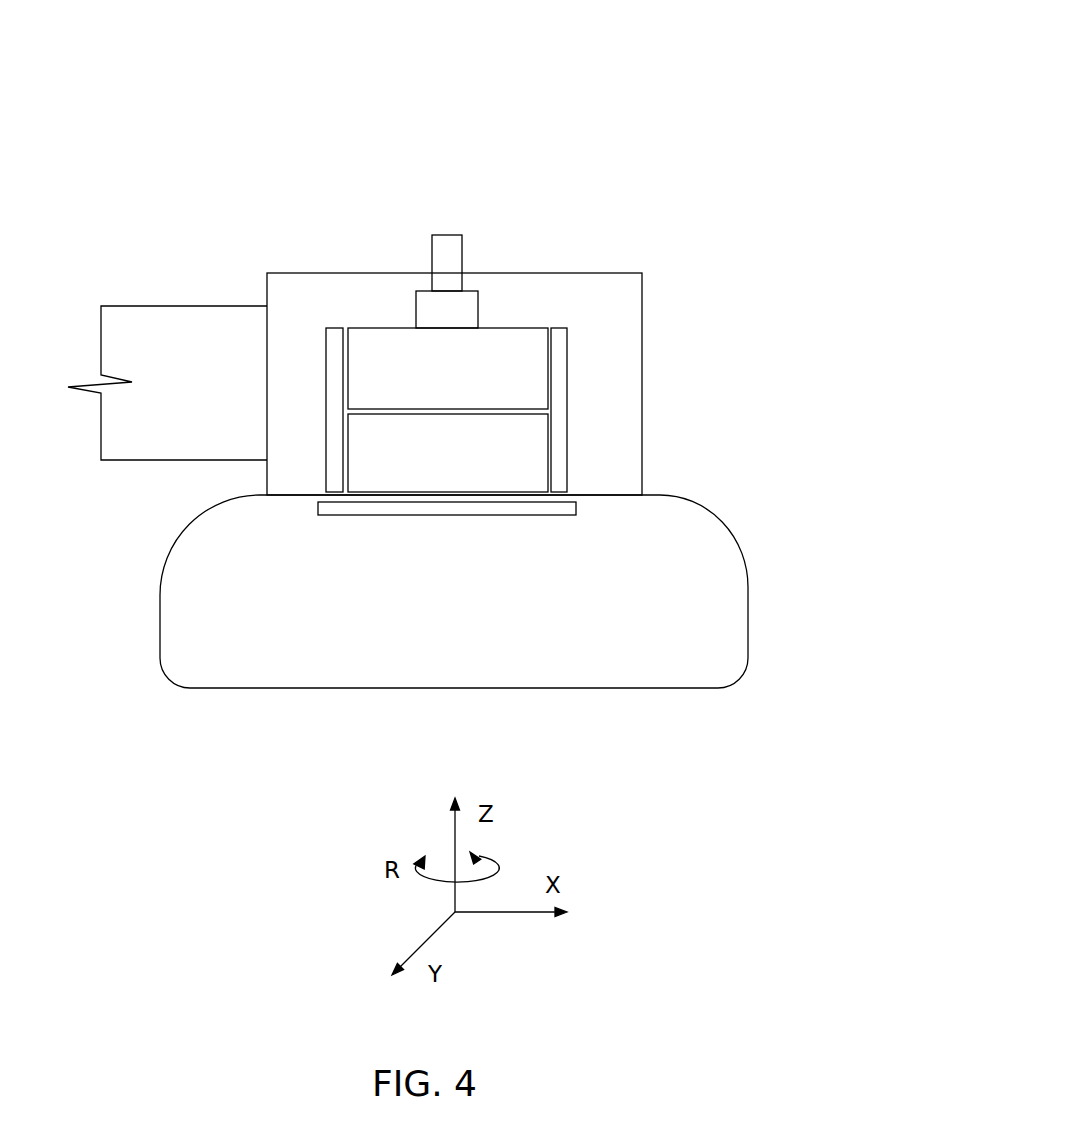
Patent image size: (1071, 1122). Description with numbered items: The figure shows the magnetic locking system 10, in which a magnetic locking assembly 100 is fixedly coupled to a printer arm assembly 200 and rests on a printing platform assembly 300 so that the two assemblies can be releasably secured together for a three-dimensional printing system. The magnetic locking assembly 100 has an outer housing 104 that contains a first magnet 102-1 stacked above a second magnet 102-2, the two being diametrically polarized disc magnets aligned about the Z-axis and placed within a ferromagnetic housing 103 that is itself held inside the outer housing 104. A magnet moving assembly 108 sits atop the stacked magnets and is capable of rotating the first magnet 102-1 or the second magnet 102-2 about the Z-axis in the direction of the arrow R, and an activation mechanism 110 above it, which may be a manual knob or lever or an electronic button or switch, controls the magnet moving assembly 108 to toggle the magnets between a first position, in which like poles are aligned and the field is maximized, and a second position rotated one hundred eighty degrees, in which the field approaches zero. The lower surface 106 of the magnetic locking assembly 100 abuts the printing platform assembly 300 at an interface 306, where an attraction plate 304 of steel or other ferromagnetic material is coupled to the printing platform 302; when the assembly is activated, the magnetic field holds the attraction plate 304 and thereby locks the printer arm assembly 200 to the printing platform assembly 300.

The magnetic locking system 10 is at (660, 42).
The magnetic locking assembly 100 is at (504, 312).
The first magnet 102-1 is at (548, 345).
The second magnet 102-2 is at (548, 438).
The ferromagnetic housing 103 is at (326, 383).
The outer housing 104 is at (348, 272).
The lower surface 106 is at (607, 478).
The magnet moving assembly 108 is at (416, 312).
The activation mechanism 110 is at (444, 235).
The printer arm assembly 200 is at (145, 262).
The printing platform assembly 300 is at (486, 640).
The printing platform 302 is at (292, 689).
The attraction plate 304 is at (455, 517).
The interface 306 is at (608, 505).